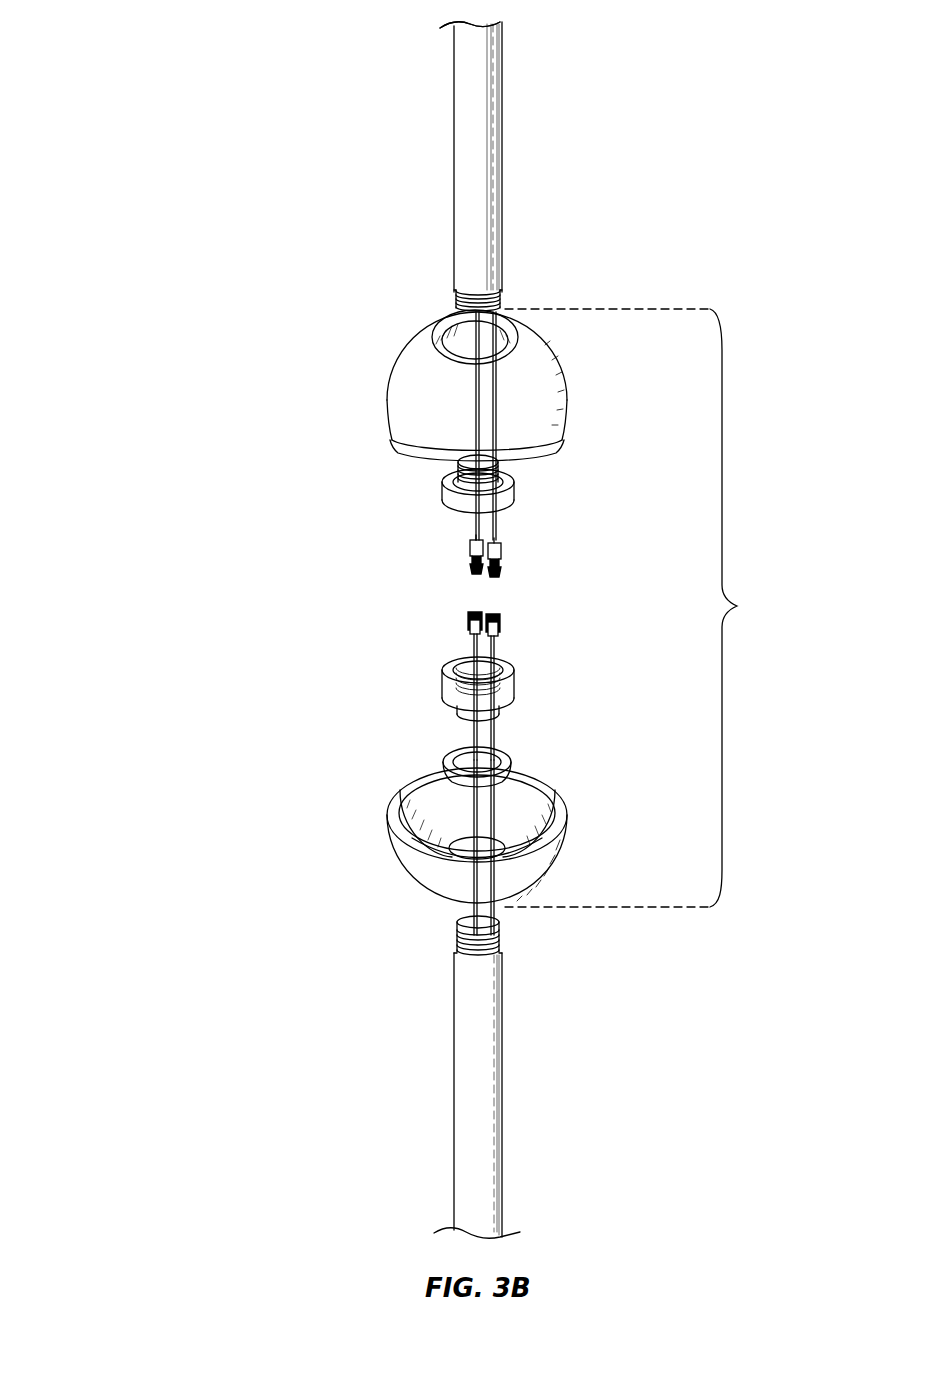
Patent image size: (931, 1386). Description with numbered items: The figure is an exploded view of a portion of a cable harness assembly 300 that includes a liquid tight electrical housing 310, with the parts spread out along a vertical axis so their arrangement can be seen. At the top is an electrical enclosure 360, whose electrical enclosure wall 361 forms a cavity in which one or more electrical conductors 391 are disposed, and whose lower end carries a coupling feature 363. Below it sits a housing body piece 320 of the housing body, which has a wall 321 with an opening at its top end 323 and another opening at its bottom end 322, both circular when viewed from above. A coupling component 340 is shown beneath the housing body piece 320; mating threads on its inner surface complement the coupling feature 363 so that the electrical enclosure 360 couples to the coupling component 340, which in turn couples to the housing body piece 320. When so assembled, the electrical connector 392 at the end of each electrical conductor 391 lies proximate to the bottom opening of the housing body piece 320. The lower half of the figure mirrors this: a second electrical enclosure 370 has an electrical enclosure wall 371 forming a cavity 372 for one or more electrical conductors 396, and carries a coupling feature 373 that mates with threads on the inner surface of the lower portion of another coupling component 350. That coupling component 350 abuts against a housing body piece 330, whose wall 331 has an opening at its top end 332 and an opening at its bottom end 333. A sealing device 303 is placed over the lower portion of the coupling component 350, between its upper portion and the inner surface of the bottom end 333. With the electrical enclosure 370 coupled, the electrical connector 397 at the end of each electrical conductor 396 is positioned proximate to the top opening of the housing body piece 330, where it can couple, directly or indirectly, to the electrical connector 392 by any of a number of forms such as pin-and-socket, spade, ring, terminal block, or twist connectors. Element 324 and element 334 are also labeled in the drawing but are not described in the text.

The cable harness assembly 300 is at (180, 40).
The liquid tight electrical housing 310 is at (651, 608).
The electrical enclosure 360 is at (452, 107).
The electrical enclosure wall 361 is at (503, 182).
The coupling feature 363 is at (455, 300).
The housing body piece 320 is at (560, 350).
The wall 321 is at (390, 375).
The bottom end 322 is at (405, 430).
The top end 323 is at (505, 318).
The dome aperture 324 is at (458, 340).
The coupling component 340 is at (438, 498).
The electrical conductors 391 is at (480, 540).
The electrical connector 392 is at (487, 552).
The electrical connector 397 is at (497, 628).
The electrical conductors 396 is at (492, 645).
The coupling component 350 is at (520, 685).
The sealing device 303 is at (448, 765).
The top end 332 is at (527, 772).
The bottom end 333 is at (540, 795).
The cup inner surface left 334 is at (430, 792).
The housing body piece 330 is at (408, 878).
The wall 331 is at (535, 876).
The cavity 372 is at (462, 920).
The coupling feature 373 is at (458, 938).
The electrical enclosure wall 371 is at (487, 1047).
The electrical enclosure 370 is at (503, 1097).